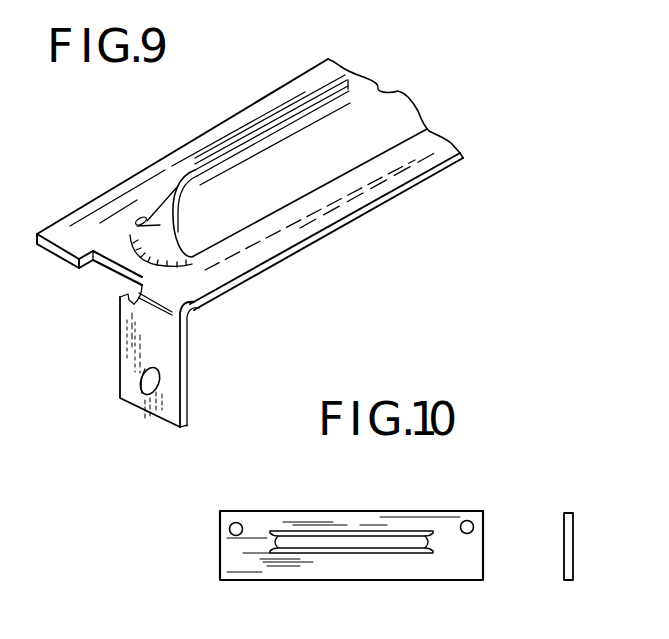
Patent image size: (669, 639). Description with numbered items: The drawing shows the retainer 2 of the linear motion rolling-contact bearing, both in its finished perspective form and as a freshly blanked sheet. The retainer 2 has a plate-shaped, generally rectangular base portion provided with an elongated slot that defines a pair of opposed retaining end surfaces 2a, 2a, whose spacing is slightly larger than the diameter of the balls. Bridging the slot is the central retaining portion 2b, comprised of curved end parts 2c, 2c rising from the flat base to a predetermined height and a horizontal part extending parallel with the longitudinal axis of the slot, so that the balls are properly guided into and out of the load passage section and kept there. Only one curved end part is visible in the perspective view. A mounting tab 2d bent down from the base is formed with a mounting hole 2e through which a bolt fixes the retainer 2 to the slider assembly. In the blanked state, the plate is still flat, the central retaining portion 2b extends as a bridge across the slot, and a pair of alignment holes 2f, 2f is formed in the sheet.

In FIG. 9, the retainer 2 is at (310, 218).
In FIG. 10, the retainer 2 is at (302, 526).
In FIG. 9, the retaining end surfaces 2a is at (418, 127).
In FIG. 10, the retaining end surfaces 2a is at (360, 556).
In FIG. 9, the central retaining portion 2b is at (265, 120).
In FIG. 10, the central retaining portion 2b is at (387, 533).
In FIG. 9, the curved end parts 2c is at (138, 218).
In FIG. 9, the mounting tabs 2d is at (162, 338).
In FIG. 9, the mounting hole 2e is at (148, 395).
In FIG. 10, the alignment holes 2f is at (468, 519).